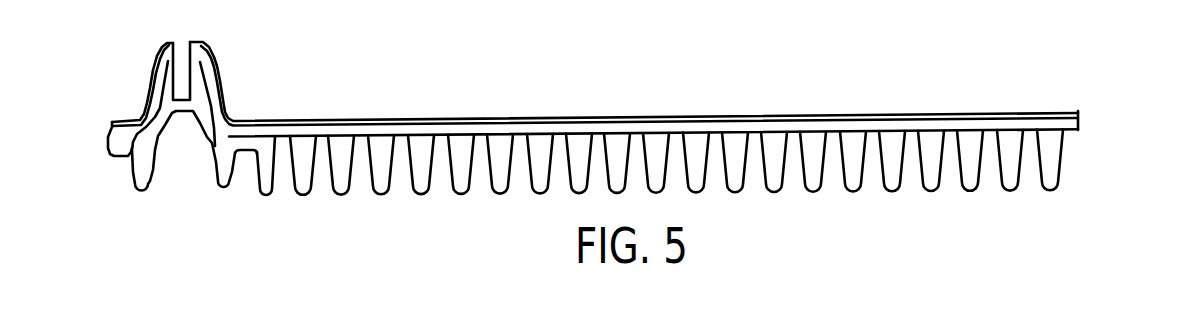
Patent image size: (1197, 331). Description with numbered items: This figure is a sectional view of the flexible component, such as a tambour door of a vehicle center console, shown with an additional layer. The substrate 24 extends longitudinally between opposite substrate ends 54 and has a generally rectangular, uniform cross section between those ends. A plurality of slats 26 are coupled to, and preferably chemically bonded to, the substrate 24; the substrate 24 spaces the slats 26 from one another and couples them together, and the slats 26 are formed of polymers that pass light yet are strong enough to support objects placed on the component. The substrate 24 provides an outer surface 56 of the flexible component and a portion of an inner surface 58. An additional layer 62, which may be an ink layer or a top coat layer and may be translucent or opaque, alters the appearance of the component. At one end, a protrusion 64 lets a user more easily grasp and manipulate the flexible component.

The substrate 24 is at (702, 100).
The slats 26 is at (853, 175).
The substrate ends 54 is at (107, 134).
The outer surface 56 is at (970, 112).
The inner surface 58 is at (951, 133).
The additional layer 62 is at (548, 117).
The protrusion 64 is at (203, 63).